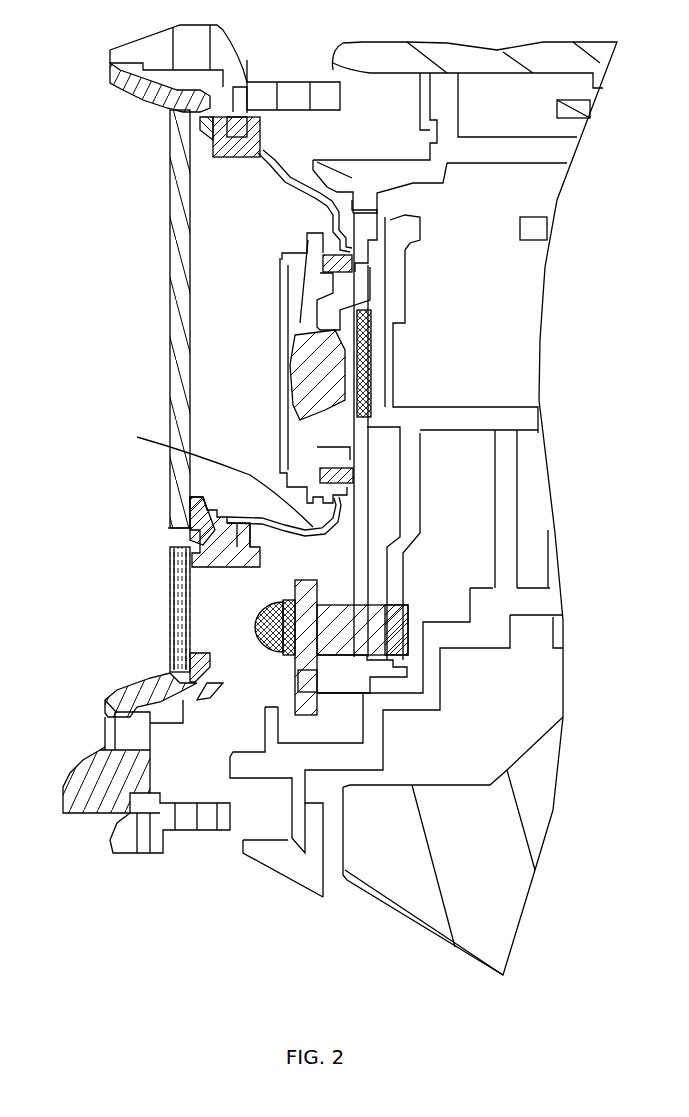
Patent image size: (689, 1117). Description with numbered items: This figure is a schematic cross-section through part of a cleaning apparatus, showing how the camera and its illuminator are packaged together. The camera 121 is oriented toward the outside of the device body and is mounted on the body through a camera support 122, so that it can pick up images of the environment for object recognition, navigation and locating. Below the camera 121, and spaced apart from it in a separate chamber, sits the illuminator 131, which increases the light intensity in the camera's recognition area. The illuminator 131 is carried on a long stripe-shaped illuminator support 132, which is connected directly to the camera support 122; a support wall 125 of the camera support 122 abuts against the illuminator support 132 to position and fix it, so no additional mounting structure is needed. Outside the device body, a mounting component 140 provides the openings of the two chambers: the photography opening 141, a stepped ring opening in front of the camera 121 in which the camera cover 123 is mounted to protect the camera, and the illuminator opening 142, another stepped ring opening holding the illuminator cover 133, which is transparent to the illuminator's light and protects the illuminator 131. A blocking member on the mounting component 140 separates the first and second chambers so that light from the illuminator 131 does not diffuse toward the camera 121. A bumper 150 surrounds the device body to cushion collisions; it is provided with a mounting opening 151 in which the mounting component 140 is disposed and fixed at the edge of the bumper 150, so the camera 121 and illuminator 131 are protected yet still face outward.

The mounting component 140 is at (165, 110).
The camera cover 123 is at (170, 233).
The camera 121 is at (300, 256).
The camera support 122 is at (410, 495).
The photography opening 141 is at (200, 497).
The illuminator opening 142 is at (170, 593).
The illuminator cover 133 is at (162, 640).
The illuminator 131 is at (258, 625).
The illuminator support 132 is at (297, 673).
The support wall 125 is at (337, 683).
The mounting opening 151 is at (105, 702).
The bumper 150 is at (123, 728).